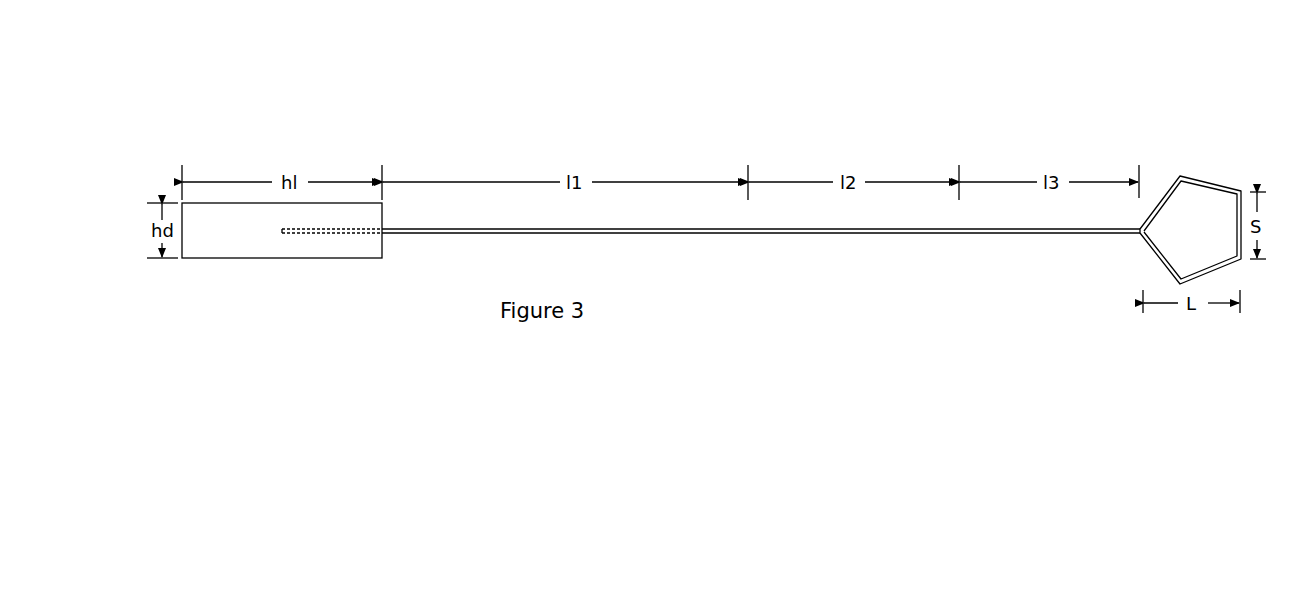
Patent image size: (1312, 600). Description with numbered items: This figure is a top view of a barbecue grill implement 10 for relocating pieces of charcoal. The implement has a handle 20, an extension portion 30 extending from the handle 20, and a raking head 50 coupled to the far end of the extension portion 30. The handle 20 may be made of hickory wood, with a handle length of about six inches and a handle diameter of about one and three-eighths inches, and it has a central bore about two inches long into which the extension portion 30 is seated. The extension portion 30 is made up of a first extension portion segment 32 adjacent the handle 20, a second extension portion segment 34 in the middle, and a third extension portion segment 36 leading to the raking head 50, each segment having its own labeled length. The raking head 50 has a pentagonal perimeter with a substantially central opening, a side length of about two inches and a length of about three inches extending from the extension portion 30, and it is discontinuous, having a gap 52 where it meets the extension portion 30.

The barbecue grill implement 10 is at (256, 62).
The handle 20 is at (233, 258).
The extension portion 30 is at (906, 86).
The first extension portion segment 32 is at (620, 233).
The second extension portion segment 34 is at (820, 233).
The third extension portion segment 36 is at (1035, 233).
The raking head 50 is at (1220, 190).
The gap 52 is at (1138, 222).